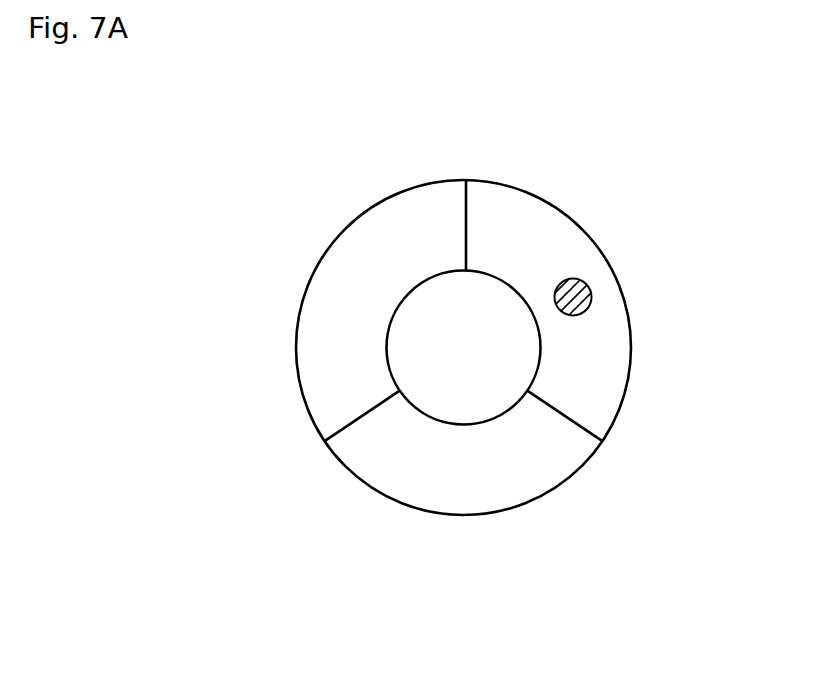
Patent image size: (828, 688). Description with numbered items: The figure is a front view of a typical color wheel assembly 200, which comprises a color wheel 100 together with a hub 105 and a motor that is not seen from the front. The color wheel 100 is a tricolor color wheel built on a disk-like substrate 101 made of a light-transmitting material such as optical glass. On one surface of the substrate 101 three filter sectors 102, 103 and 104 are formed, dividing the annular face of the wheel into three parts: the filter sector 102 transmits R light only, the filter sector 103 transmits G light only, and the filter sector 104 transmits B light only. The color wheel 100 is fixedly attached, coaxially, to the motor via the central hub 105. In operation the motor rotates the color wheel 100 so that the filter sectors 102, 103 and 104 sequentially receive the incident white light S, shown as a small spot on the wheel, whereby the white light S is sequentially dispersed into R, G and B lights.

The color wheel 100 is at (586, 227).
The disk-like substrate 101 is at (361, 481).
The filter sector 102 is at (600, 378).
The filter sector 103 is at (508, 487).
The filter sector 104 is at (380, 243).
The hub 105 is at (478, 300).
The white light S is at (590, 285).
The color wheel assembly 200 is at (391, 565).